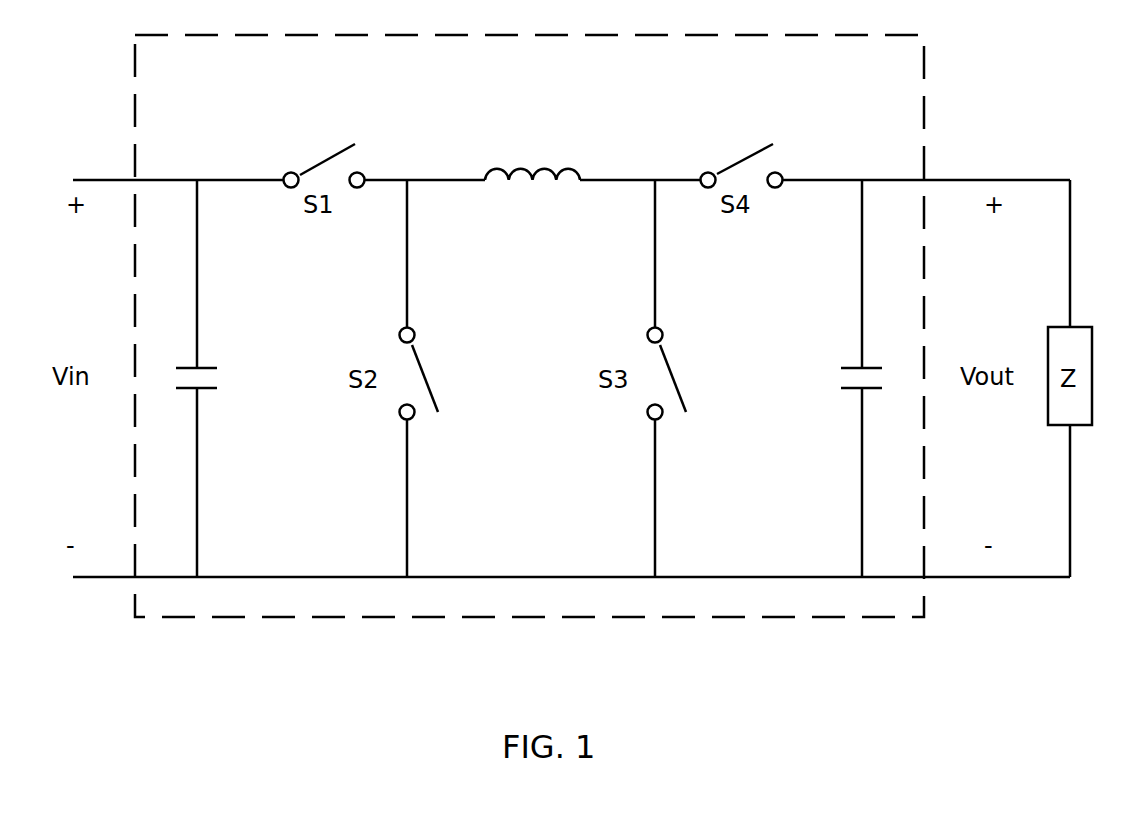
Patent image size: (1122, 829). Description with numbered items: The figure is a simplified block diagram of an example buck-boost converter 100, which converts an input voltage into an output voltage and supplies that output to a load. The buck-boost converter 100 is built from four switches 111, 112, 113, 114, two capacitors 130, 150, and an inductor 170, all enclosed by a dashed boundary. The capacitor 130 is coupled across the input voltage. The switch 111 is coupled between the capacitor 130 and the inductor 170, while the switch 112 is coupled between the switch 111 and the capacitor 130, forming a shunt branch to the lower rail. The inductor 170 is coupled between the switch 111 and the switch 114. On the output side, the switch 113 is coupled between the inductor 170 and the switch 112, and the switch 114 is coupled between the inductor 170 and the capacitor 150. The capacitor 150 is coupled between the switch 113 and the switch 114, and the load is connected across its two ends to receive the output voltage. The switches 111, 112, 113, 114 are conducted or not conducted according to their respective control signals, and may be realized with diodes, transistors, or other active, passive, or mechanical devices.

The buck-boost converter 100 is at (135, 132).
The switch 111 is at (306, 155).
The switch 112 is at (452, 380).
The switch 113 is at (702, 380).
The switch 114 is at (724, 153).
The capacitor 130 is at (224, 408).
The capacitor 150 is at (834, 410).
The inductor 170 is at (536, 155).